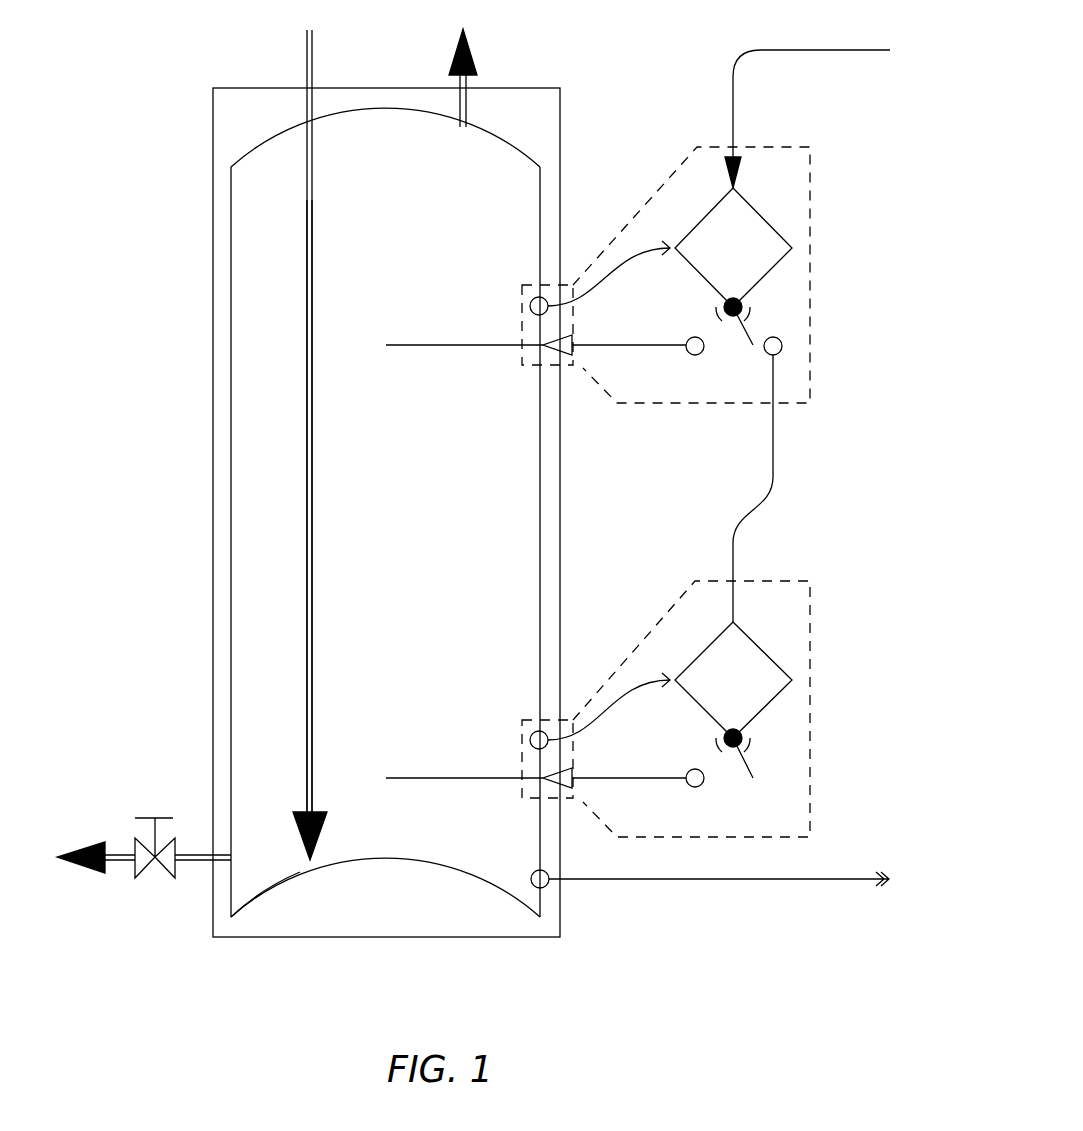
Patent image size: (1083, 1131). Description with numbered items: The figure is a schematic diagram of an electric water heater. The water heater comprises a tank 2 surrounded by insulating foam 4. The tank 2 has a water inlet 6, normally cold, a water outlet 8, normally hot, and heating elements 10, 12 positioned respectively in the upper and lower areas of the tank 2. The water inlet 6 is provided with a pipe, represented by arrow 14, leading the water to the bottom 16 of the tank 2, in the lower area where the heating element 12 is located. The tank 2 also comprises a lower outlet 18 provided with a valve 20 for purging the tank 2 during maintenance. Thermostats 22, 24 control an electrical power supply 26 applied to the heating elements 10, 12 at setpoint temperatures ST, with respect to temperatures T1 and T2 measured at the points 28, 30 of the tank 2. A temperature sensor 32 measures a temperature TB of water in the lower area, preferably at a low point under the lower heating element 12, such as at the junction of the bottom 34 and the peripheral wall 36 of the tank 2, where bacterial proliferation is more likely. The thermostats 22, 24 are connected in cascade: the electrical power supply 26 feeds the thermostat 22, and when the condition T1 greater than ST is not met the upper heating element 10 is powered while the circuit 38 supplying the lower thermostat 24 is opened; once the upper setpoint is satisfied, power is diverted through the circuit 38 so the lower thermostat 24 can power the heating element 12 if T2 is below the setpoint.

The tank 2 is at (263, 402).
The insulating foam 4 is at (222, 557).
The water inlet 6 is at (306, 88).
The water outlet 8 is at (467, 83).
The heating element 10 is at (475, 347).
The heating element 12 is at (455, 777).
The pipe 14 is at (307, 265).
The bottom 16 is at (310, 860).
The lower outlet 18 is at (210, 862).
The valve 20 is at (140, 870).
The thermostat 22 is at (808, 147).
The thermostat 24 is at (808, 581).
The electrical power supply 26 is at (778, 48).
The point 28 is at (548, 294).
The point 30 is at (548, 730).
The temperature sensor 32 is at (546, 886).
The bottom 34 is at (472, 873).
The peripheral wall 36 is at (542, 833).
The circuit 38 is at (773, 463).